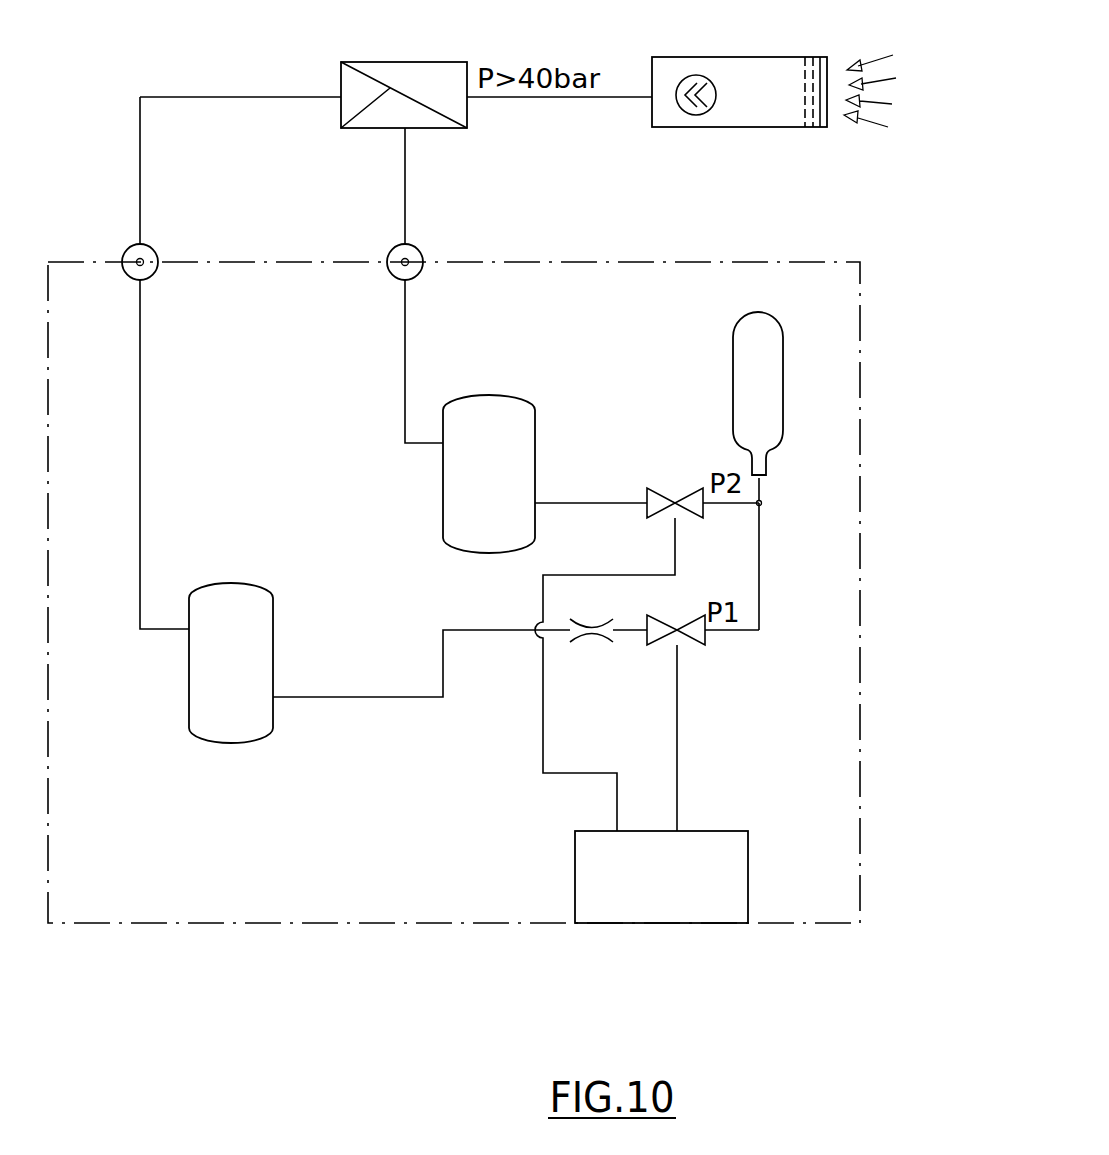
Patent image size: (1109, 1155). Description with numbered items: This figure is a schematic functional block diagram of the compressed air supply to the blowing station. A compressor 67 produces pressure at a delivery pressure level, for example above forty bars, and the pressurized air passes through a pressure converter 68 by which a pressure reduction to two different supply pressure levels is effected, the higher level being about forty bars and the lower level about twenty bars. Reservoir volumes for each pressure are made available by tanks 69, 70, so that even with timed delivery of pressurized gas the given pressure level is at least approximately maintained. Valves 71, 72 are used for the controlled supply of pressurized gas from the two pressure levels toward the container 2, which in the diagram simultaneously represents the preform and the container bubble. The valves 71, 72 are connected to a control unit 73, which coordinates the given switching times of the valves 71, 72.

The container 2 is at (774, 345).
The compressor 67 is at (663, 75).
The pressure regulator / filter 68 is at (370, 70).
The tank 69 is at (220, 593).
The tank 70 is at (497, 397).
The valve 71 is at (690, 643).
The valve 72 is at (665, 490).
The control unit 73 is at (607, 865).